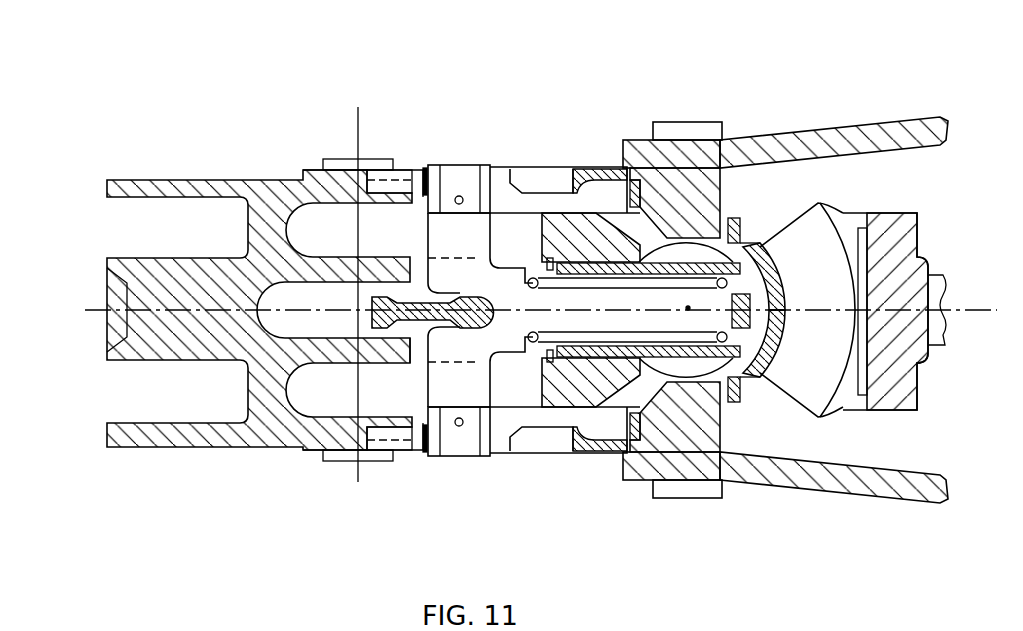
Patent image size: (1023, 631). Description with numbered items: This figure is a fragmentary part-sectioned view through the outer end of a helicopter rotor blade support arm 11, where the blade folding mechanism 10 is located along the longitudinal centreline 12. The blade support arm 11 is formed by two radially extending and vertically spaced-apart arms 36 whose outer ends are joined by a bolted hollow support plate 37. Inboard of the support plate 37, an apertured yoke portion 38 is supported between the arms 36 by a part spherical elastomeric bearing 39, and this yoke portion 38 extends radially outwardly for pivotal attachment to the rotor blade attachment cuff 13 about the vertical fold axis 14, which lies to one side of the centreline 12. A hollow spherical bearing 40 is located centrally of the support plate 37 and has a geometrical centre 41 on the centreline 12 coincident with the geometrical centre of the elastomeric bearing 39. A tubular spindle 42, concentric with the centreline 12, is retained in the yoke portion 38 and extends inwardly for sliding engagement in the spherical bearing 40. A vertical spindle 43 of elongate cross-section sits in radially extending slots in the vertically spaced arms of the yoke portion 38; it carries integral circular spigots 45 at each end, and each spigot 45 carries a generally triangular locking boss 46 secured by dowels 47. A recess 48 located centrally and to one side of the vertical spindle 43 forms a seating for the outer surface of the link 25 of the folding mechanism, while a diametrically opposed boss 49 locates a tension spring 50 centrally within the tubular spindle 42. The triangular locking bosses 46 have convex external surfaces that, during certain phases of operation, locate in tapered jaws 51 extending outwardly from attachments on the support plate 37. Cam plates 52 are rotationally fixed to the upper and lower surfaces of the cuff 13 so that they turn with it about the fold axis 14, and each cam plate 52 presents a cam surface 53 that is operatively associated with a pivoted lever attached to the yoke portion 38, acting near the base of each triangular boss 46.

The blade folding mechanism 10 is at (478, 78).
The blade support arm 11 is at (840, 88).
The longitudinal centreline 12 is at (973, 308).
The rotor blade attachment cuff 13 is at (245, 178).
The vertical fold axis 14 is at (358, 117).
The link 25 is at (385, 318).
The arms 36 is at (907, 127).
The hollow support plate 37 is at (660, 185).
The apertured yoke portion 38 is at (910, 232).
The part spherical elastomeric bearing 39 is at (813, 217).
The hollow spherical bearing 40 is at (692, 253).
The geometrical centre 41 is at (688, 308).
The tubular spindle 42 is at (640, 352).
The vertical spindle 43 is at (482, 390).
The circular spigots 45 is at (467, 167).
The triangular locking boss 46 is at (490, 173).
The dowels 47 is at (458, 196).
The recess 48 is at (420, 338).
The boss 49 is at (515, 340).
The tension spring 50 is at (730, 367).
The tapered jaws 51 is at (557, 178).
The cam plates 52 is at (313, 170).
The cam surface 53 is at (425, 173).